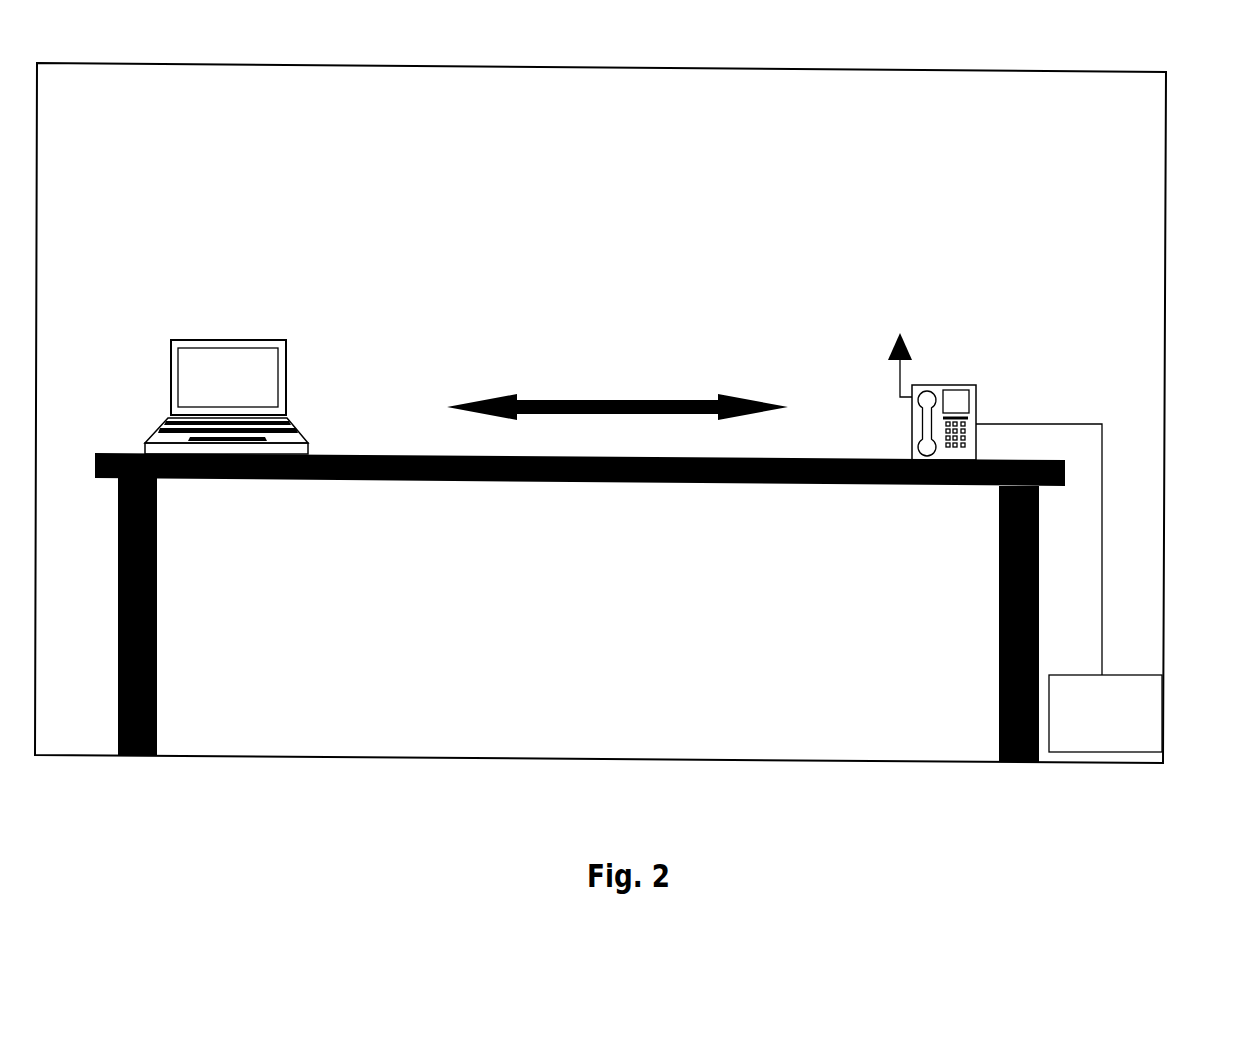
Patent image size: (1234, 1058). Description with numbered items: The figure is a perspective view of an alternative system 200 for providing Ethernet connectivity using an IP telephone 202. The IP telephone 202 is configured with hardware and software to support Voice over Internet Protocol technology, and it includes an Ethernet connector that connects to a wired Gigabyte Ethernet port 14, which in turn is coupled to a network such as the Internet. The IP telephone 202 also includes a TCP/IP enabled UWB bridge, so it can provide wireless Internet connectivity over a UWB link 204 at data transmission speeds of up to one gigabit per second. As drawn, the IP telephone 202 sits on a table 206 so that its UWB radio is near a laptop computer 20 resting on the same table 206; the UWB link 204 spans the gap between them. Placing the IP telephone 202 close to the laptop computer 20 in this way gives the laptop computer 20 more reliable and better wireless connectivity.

The alternative system 200 is at (158, 242).
The laptop computer 20 is at (285, 342).
The IP telephone 202 is at (976, 385).
The UWB link 204 is at (590, 400).
The table 206 is at (158, 590).
The wired Gigabyte Ethernet port 14 is at (1137, 675).